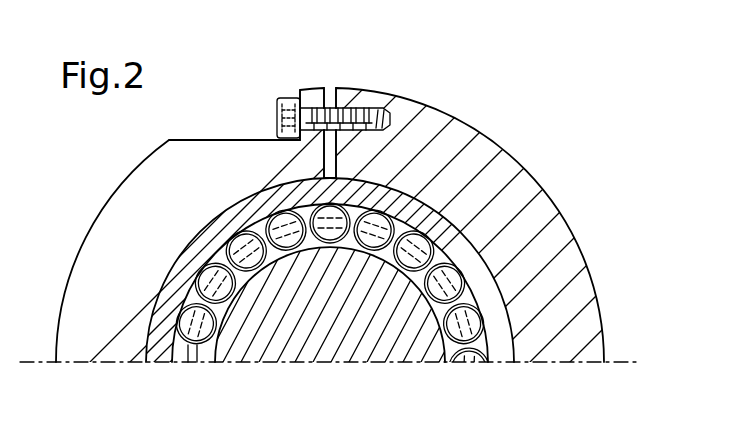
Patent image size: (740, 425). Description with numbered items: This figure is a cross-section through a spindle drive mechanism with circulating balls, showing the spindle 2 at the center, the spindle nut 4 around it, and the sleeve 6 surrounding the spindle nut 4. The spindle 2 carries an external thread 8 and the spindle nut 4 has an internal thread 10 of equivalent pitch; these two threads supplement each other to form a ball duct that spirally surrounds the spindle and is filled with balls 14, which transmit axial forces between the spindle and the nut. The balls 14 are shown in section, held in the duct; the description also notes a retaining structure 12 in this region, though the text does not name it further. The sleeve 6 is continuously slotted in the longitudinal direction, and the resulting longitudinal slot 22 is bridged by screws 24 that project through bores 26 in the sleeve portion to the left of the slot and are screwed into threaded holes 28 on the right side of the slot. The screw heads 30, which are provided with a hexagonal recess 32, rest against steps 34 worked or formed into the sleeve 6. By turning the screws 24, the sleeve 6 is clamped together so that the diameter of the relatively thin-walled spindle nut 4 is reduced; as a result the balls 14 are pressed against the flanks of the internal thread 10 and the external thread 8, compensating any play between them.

The spindle 2 is at (350, 350).
The spindle nut 4 is at (505, 352).
The sleeve 6 is at (545, 197).
The external thread 8 is at (207, 353).
The internal thread 10 is at (172, 355).
The cage 12 is at (190, 361).
The balls 14 is at (369, 236).
The longitudinal slot 22 is at (330, 92).
The screws 24 is at (365, 112).
The bores 26 is at (312, 102).
The threaded holes 28 is at (393, 117).
The screw heads 30 is at (282, 97).
The hexagonal recess 32 is at (277, 111).
The steps 34 is at (299, 91).